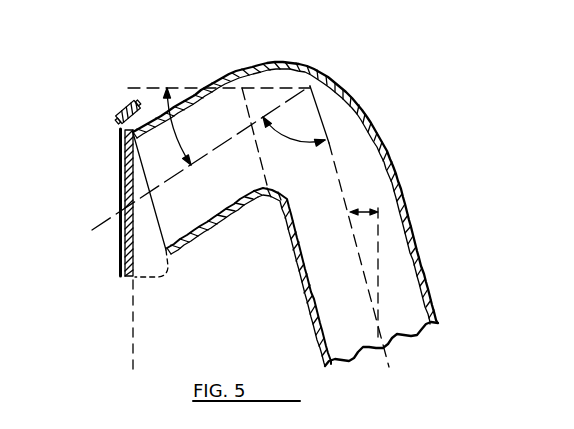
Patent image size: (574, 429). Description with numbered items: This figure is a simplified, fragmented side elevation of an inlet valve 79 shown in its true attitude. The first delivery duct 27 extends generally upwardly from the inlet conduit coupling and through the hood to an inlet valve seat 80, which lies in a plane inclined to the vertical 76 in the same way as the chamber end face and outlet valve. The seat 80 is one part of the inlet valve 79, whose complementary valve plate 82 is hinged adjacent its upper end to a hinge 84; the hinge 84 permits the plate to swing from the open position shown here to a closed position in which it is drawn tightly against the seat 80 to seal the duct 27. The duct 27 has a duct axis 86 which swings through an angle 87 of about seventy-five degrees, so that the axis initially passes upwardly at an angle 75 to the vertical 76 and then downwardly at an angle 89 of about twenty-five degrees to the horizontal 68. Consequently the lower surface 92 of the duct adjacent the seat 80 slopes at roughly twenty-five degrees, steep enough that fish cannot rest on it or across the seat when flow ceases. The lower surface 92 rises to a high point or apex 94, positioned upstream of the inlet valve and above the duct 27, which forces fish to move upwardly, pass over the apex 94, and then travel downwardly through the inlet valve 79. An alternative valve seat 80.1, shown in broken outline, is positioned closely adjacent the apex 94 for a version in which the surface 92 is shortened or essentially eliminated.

The first delivery duct 27 is at (426, 289).
The horizontal 68 is at (135, 88).
The angle to the vertical 75 is at (353, 210).
The vertical 76 is at (380, 268).
The inlet valve 79 is at (100, 192).
The inlet valve seat 80 is at (158, 243).
The alternative valve seat 80.1 is at (245, 200).
The valve plate 82 is at (122, 277).
The hinge 84 is at (125, 113).
The duct axis 86 is at (190, 164).
The angle 87 is at (291, 139).
The angle to the horizontal 89 is at (174, 128).
The lower surface 92 is at (212, 220).
The apex 94 is at (280, 194).